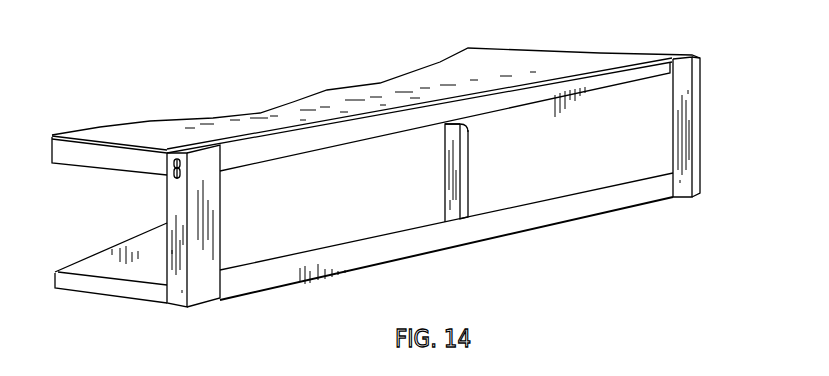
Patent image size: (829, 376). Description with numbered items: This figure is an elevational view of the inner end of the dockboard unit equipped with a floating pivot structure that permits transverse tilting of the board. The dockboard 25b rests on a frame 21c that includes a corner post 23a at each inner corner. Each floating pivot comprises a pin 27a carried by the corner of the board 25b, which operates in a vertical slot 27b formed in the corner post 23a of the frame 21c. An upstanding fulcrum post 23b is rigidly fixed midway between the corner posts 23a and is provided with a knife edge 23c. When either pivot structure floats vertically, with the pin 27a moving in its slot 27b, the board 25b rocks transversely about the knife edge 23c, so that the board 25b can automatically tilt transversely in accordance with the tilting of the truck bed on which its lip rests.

The dockboard 25b is at (537, 63).
The pin 27a is at (174, 175).
The vertical slot 27b is at (171, 163).
The corner post 23a is at (213, 213).
The fulcrum post 23b is at (470, 190).
The knife edge 23c is at (457, 130).
The frame 21c is at (680, 138).